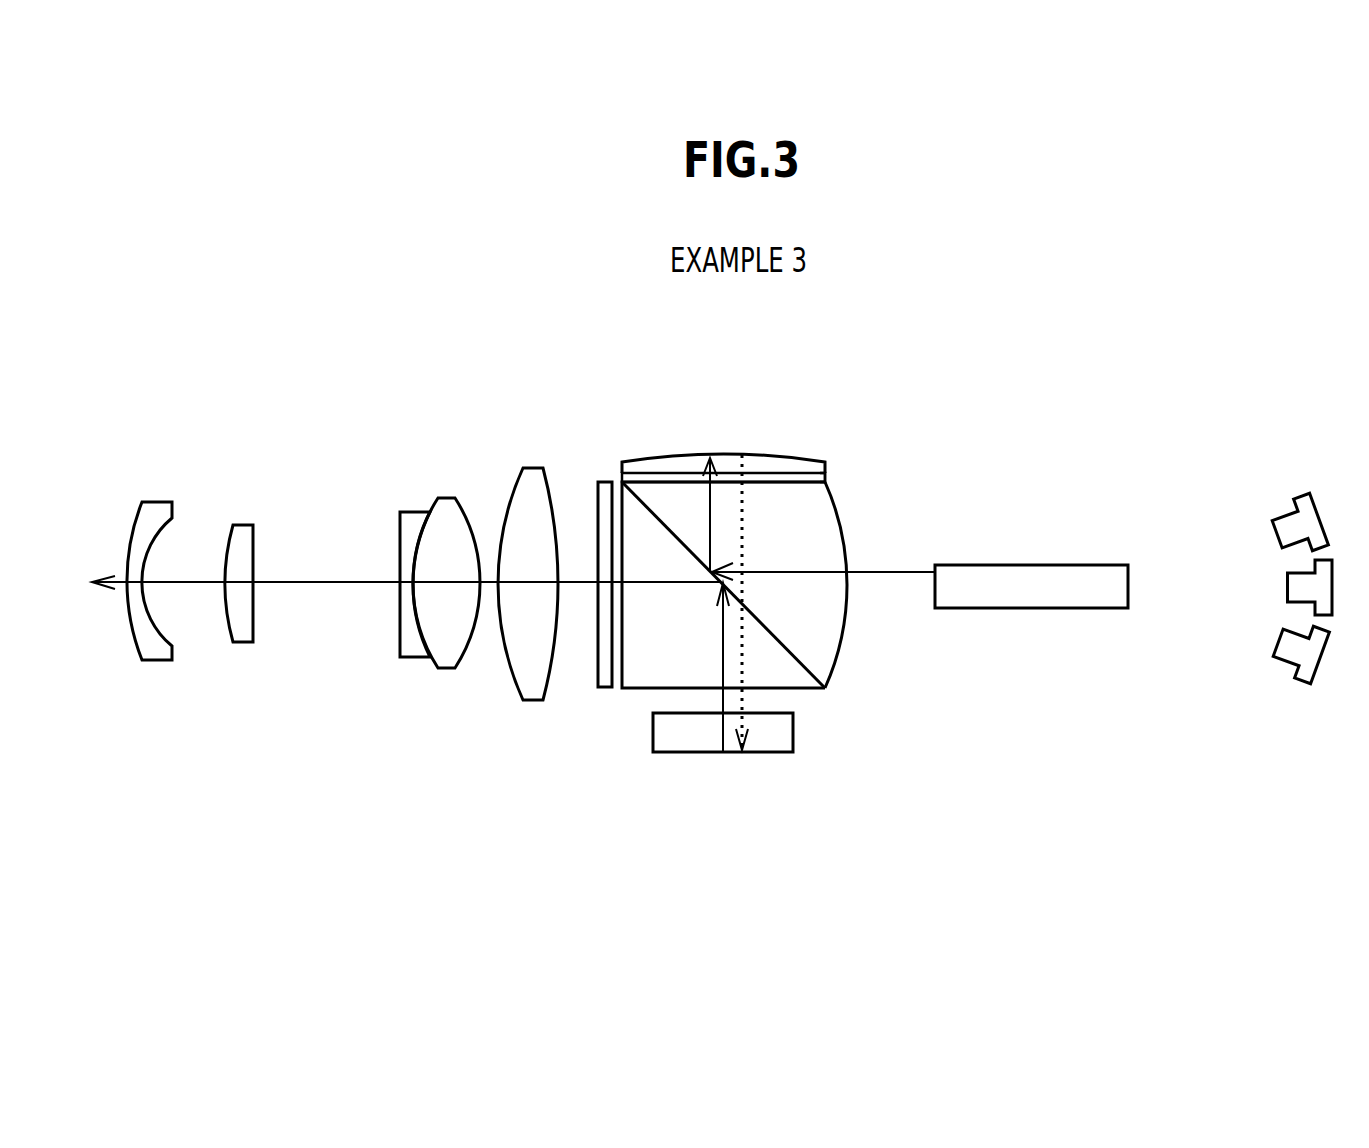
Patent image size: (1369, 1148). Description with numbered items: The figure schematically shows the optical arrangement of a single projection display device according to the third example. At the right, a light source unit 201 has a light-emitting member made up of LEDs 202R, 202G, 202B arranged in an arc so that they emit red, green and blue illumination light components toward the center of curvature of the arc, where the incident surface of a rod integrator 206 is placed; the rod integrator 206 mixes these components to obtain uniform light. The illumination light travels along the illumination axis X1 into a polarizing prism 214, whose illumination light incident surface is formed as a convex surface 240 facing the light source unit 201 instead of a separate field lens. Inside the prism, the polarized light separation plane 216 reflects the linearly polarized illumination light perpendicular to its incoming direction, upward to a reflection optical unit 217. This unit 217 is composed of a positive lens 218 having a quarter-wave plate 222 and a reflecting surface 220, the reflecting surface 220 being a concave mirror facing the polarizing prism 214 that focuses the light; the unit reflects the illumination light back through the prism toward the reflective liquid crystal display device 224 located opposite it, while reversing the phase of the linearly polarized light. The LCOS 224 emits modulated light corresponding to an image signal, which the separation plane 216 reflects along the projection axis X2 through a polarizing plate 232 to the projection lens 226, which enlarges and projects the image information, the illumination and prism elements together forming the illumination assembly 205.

The light source unit 201 is at (1260, 585).
The LED (red) 202R is at (1290, 510).
The LED (green) 202G is at (1323, 592).
The LED (blue) 202B is at (1292, 655).
The illumination optical system 205 is at (1143, 777).
The rod integrator 206 is at (1043, 577).
The polarizing prism 214 is at (645, 680).
The polarized light separation plane 216 is at (797, 662).
The reflection optical unit 217 is at (742, 439).
The positive lens 218 is at (668, 462).
The reflecting surface 220 is at (762, 453).
The quarter-wave plate 222 is at (823, 477).
The reflective liquid crystal display device (LCOS) 224 is at (662, 730).
The projection lens 226 is at (568, 440).
The polarizing plate 232 is at (597, 675).
The polarizing prism (illumination incident surface) 240 is at (840, 630).
The illumination optical axis X1 is at (900, 573).
The projection optical axis X2 is at (310, 587).